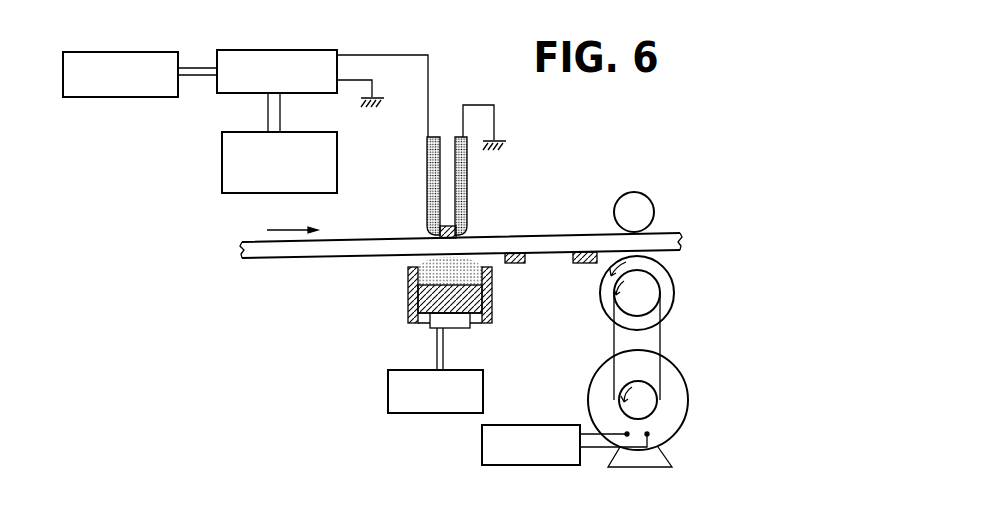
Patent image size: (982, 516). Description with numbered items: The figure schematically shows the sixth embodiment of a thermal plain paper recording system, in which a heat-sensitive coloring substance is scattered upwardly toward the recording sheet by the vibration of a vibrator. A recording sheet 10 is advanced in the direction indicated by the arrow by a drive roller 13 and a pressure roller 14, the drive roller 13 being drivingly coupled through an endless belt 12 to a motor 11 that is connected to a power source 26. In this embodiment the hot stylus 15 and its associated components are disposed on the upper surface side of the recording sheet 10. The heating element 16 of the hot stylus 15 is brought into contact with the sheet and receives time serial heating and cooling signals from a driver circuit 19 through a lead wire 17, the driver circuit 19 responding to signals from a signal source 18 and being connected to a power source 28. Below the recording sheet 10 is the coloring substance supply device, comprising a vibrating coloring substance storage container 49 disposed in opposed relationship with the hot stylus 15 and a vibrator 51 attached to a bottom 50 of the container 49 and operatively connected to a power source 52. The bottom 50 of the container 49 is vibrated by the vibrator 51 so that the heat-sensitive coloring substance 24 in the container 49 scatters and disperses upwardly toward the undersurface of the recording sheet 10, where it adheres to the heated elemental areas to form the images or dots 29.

The recording sheet 10 is at (325, 259).
The motor 11 is at (676, 393).
The endless belt 12 is at (662, 338).
The drive roller 13 is at (674, 282).
The pressure roller 14 is at (636, 192).
The hot stylus 15 is at (467, 180).
The heating element 16 is at (447, 226).
The lead wire 17 is at (427, 182).
The signal source 18 is at (222, 156).
The driver circuit 19 is at (286, 50).
The heat-sensitive coloring substance 24 is at (430, 295).
The power source 26 is at (482, 443).
The power source 28 is at (113, 97).
The images or dots 29 is at (514, 264).
The coloring substance storage container 49 is at (490, 305).
The bottom of the container 50 is at (430, 324).
The vibrator 51 is at (460, 329).
The power source 52 is at (388, 388).